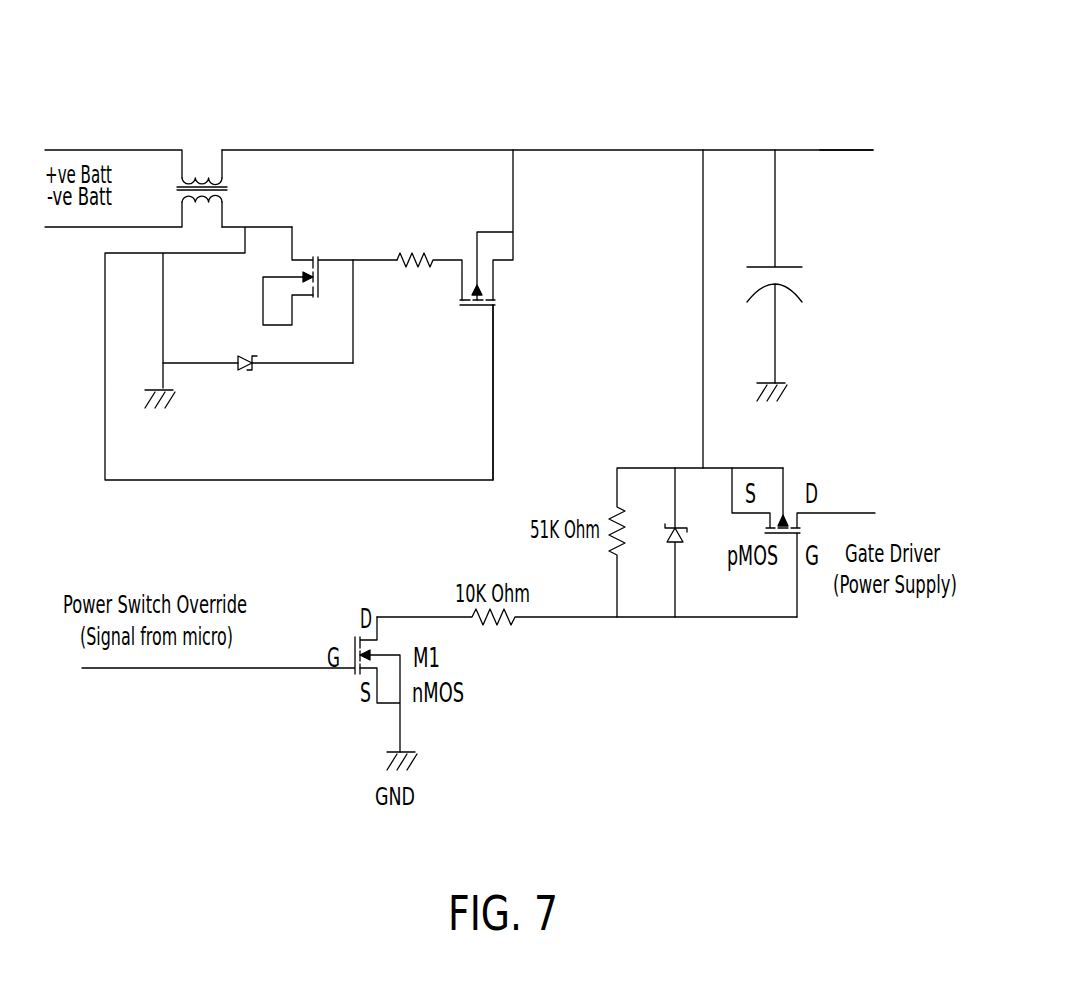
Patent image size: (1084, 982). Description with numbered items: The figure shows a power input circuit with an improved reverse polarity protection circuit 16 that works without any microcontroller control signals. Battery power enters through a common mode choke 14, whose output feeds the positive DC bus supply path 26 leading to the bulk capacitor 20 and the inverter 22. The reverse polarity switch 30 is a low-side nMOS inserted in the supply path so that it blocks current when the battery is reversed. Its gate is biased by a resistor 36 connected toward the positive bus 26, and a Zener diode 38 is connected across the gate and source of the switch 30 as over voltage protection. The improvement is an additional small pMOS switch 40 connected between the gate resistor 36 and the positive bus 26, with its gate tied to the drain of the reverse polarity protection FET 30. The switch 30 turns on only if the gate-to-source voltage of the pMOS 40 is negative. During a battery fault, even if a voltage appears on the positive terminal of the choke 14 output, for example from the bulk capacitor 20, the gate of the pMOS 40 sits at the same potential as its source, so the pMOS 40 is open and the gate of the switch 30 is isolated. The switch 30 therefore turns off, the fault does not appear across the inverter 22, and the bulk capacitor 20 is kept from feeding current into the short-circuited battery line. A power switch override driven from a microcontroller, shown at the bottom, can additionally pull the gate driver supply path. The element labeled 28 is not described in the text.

The common mode choke 14 is at (192, 178).
The reverse polarity protection circuit 16 is at (485, 112).
The bulk capacitor 20 is at (783, 263).
The inverter 22 is at (884, 166).
The DC bus supply path 26 is at (252, 150).
The secondary winding connection 28 is at (232, 230).
The switch 30 is at (318, 287).
The resistor 36 is at (417, 253).
The Zener diode 38 is at (240, 373).
The switch 40 is at (483, 307).